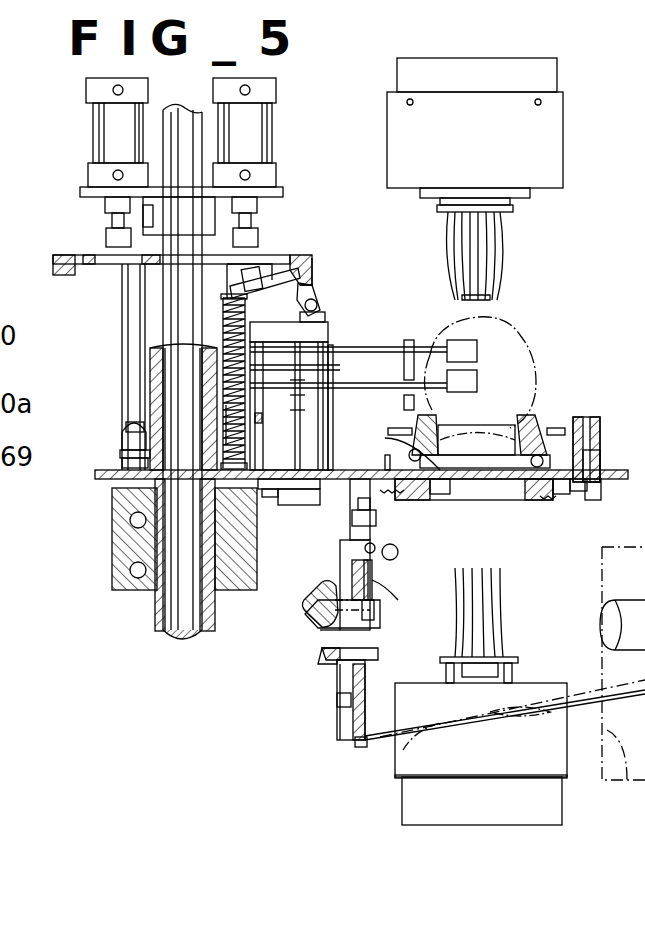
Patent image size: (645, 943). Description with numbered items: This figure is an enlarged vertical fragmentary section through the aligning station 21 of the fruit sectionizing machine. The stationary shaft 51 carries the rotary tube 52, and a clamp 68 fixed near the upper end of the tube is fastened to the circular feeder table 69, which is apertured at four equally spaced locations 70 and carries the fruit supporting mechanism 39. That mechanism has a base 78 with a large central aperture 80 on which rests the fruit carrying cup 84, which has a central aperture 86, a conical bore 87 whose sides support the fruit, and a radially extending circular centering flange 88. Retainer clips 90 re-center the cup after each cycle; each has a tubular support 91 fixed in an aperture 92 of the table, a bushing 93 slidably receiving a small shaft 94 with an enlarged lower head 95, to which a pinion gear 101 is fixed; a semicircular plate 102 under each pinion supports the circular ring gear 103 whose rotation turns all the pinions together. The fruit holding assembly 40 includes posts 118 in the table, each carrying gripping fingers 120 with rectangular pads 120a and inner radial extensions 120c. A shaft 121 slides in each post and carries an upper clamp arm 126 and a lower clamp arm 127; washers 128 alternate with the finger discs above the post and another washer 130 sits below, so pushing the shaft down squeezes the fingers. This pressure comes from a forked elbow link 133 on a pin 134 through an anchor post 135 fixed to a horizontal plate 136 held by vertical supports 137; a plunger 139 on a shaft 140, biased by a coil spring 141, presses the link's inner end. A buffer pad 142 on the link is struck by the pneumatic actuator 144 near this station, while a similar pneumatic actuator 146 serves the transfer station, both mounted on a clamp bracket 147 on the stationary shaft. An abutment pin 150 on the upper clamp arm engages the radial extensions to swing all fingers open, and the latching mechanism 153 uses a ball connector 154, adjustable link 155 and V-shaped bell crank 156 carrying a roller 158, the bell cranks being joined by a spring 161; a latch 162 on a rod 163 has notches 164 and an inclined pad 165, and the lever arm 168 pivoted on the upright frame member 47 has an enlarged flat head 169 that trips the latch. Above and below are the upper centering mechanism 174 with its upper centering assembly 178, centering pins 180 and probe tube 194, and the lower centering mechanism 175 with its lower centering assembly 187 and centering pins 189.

The fruit holding assembly 40 is at (60, 126).
The pneumatic actuator 146 is at (96, 140).
The pneumatic actuator 144 is at (258, 128).
The clamp bracket 147 is at (88, 191).
The horizontal plate 136 is at (82, 252).
The vertical supports 137 is at (230, 272).
The plunger 139 is at (222, 318).
The inner radial extension 120c is at (214, 350).
The abutment pin 150 is at (226, 412).
The shaft 140 is at (225, 425).
The coil spring 141 is at (232, 446).
The feeder table 69 is at (97, 476).
The clamp 68 is at (118, 534).
The stationary shaft 51 is at (172, 598).
The rotary tube 52 is at (167, 624).
The latching mechanism 153 is at (300, 594).
The inclined pad 165 is at (312, 620).
The latch 162 is at (340, 656).
The enlarged flat head 169 is at (338, 672).
The posts 118 is at (310, 498).
The lower clamp arm 127 is at (321, 554).
The rod 163 is at (362, 548).
The ball connector 154 is at (376, 516).
The adjustable link 155 is at (376, 548).
The spring 161 is at (390, 560).
The notches 164 is at (411, 603).
The roller 158 is at (376, 606).
The V-shaped bell crank 156 is at (362, 625).
The buffer pad 142 is at (258, 266).
The forked elbow link 133 is at (283, 278).
The anchor post 135 is at (318, 262).
The pin 134 is at (316, 280).
The shaft 121 is at (318, 302).
The upper clamp arm 126 is at (325, 314).
The gripping fingers 120 is at (322, 368).
The washers 128 is at (306, 385).
The base 78 is at (392, 442).
The washer 130 is at (310, 485).
The aligning station 21 is at (545, 313).
The rectangular pad 120a is at (456, 348).
The conical bore 87 is at (480, 366).
The central aperture 86 is at (440, 425).
The fruit supporting mechanism 39 is at (585, 372).
The fruit carrying cup 84 is at (535, 418).
The circular centering flange 88 is at (545, 458).
The small shaft 94 is at (590, 420).
The retainer clips 90 is at (592, 420).
The tubular support 91 is at (598, 448).
The bushing 93 is at (599, 462).
The apertures 70 is at (455, 490).
The central aperture 80 is at (500, 490).
The semicircular plate 102 is at (535, 498).
The pinion gear 101 is at (562, 500).
The circular ring gear 103 is at (505, 505).
The enlarged lower head 95 is at (586, 500).
The aperture 92 is at (598, 495).
The centering pins 189 is at (472, 640).
The lever arm 168 is at (412, 722).
The lower centering mechanism 175 is at (400, 804).
The upright frame member 47 is at (568, 776).
The lower centering assembly 187 is at (512, 810).
The upper centering mechanism 174 is at (530, 50).
The upper centering assembly 178 is at (570, 130).
The centering pins 180 is at (462, 240).
The probe tube 194 is at (480, 254).